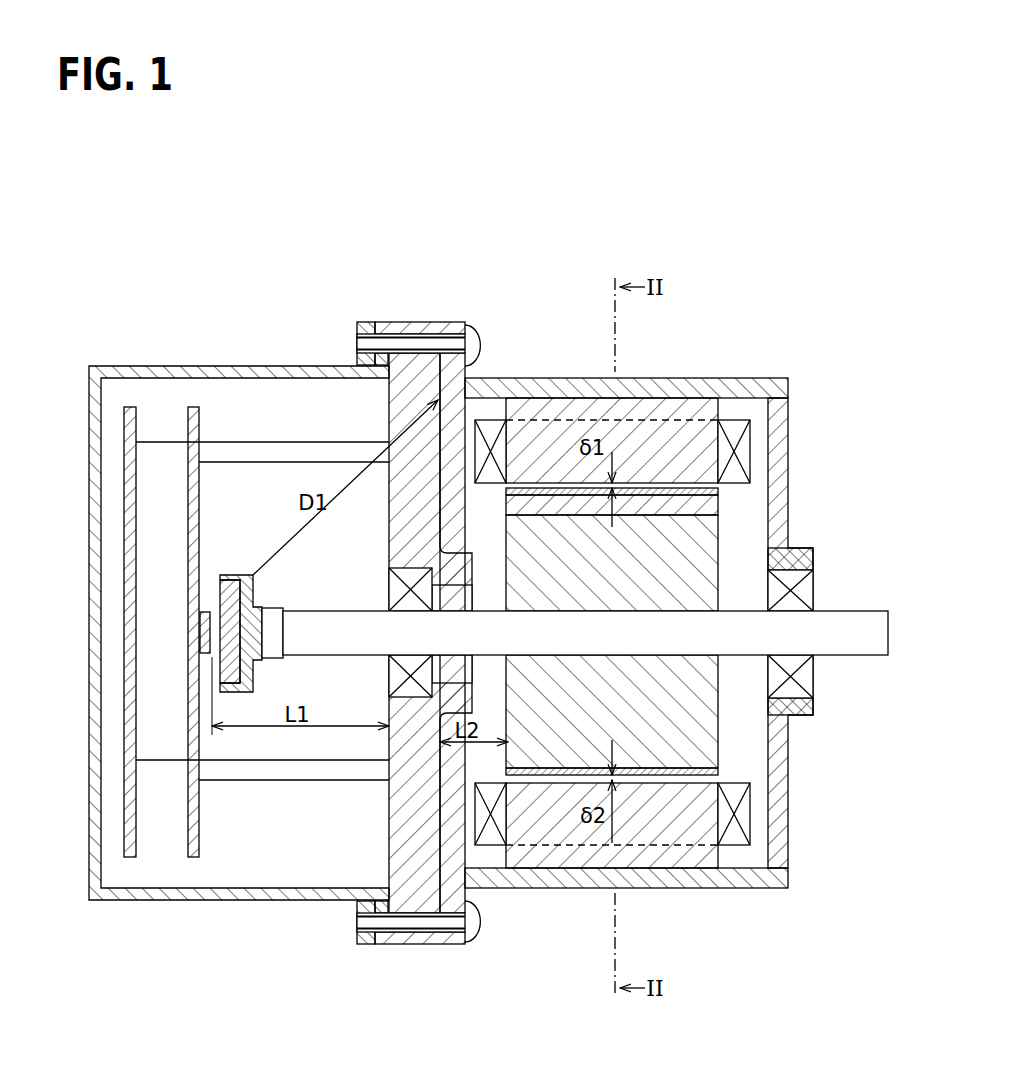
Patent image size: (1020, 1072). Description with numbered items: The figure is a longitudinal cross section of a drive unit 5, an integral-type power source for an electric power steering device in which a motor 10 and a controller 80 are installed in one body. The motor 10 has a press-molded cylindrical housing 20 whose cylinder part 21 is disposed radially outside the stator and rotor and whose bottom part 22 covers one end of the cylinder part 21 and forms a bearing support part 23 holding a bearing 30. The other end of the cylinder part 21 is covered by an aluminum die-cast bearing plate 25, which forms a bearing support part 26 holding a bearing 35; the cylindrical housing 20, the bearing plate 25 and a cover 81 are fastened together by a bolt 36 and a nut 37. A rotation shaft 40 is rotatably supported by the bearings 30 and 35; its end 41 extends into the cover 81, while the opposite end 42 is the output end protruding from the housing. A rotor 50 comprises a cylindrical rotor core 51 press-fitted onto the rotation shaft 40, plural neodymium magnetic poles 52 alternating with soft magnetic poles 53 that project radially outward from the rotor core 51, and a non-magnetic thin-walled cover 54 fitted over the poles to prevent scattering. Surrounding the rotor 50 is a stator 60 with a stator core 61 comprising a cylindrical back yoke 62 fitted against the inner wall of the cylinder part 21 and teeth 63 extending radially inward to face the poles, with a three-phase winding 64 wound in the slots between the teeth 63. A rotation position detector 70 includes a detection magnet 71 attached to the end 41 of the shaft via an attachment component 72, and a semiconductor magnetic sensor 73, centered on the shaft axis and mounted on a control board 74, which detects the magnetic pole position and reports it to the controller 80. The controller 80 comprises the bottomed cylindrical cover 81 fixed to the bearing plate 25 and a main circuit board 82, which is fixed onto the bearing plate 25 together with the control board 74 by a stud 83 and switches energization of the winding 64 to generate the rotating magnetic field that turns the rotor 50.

The drive unit 5 is at (122, 335).
The motor 10 is at (758, 355).
The cylindrical housing 20 is at (792, 390).
The cylinder part 21 is at (569, 390).
The bottom part 22 is at (778, 475).
The bearing support part 23 is at (798, 560).
The bearing plate 25 is at (412, 325).
The bearing support part 26 is at (530, 765).
The bearing 30 is at (803, 590).
The bearing 35 is at (410, 690).
The bolt 36 is at (469, 335).
The nut 37 is at (366, 322).
The rotation shaft 40 is at (745, 658).
The end 41 is at (275, 642).
The end 42 is at (853, 640).
The rotor 50 is at (721, 533).
The rotor core 51 is at (645, 693).
The magnetic poles 52 is at (708, 505).
The soft magnetic poles 53 is at (693, 745).
The thin-walled cover 54 is at (657, 745).
The stator 60 is at (752, 447).
The stator core 61 is at (725, 332).
The back yoke 62 is at (650, 410).
The teeth 63 is at (683, 463).
The winding 64 is at (497, 432).
The rotation position detector 70 is at (213, 588).
The detection magnet 71 is at (224, 597).
The attachment component 72 is at (251, 578).
The semiconductor magnetic sensor 73 is at (209, 637).
The control board 74 is at (194, 857).
The controller 80 is at (210, 363).
The cover 81 is at (97, 418).
The main circuit board 82 is at (130, 857).
The stud 83 is at (287, 453).